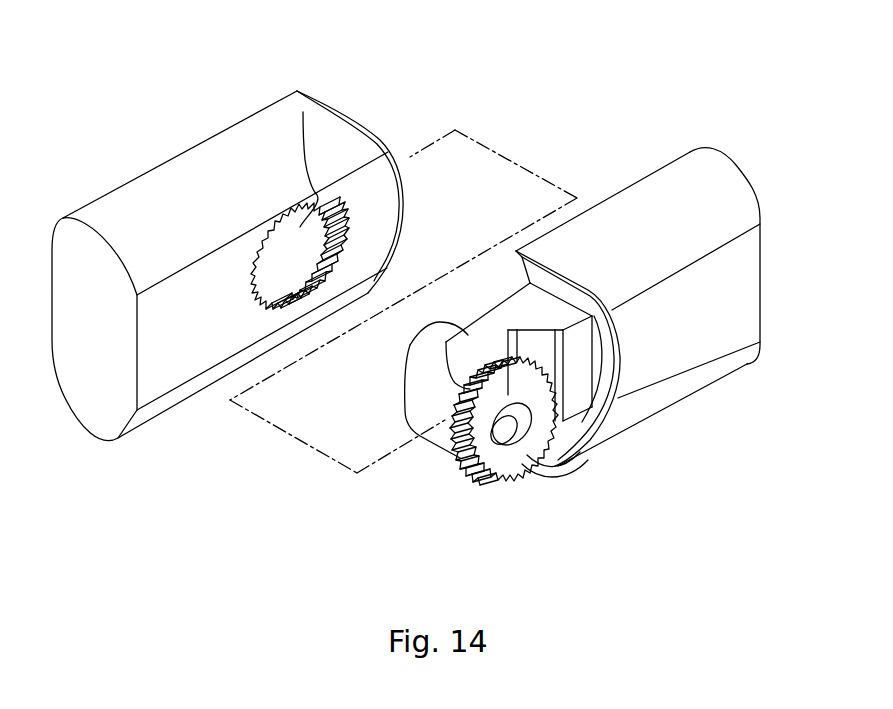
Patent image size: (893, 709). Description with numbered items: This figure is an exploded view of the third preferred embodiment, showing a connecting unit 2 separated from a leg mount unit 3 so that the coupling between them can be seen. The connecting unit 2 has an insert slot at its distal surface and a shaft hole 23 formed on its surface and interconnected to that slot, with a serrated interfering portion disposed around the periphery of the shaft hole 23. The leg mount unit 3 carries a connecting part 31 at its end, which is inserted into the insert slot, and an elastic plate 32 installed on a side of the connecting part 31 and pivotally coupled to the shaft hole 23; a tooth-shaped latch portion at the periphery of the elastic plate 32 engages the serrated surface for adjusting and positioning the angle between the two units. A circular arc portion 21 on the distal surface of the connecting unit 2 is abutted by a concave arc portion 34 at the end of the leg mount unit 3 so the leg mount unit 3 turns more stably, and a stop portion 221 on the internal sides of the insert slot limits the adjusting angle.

The connecting unit 2 is at (162, 122).
The circular arc portion 21 is at (402, 207).
The stop portion 221 is at (298, 268).
The shaft hole 23 is at (303, 112).
The leg mount unit 3 is at (622, 453).
The connecting part 31 is at (408, 341).
The elastic plate 32 is at (497, 472).
The concave arc portion 34 is at (620, 388).